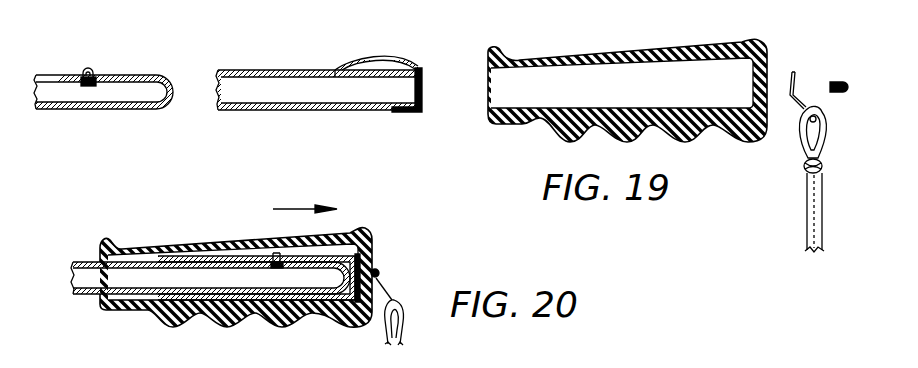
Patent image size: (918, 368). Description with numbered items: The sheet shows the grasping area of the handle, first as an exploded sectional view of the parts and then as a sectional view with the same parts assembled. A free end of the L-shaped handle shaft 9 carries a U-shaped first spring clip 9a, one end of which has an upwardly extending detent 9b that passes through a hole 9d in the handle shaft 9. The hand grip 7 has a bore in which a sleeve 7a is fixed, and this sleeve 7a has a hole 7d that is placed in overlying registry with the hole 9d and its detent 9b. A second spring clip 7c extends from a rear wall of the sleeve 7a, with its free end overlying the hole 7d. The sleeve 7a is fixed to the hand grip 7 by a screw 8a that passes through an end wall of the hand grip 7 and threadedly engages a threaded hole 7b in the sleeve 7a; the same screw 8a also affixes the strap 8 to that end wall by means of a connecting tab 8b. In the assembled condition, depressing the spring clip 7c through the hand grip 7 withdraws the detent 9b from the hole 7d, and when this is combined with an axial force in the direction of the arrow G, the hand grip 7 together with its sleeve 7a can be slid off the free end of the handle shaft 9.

In FIG. 19, the hand grip 7 is at (615, 85).
In FIG. 20, the hand grip 7 is at (178, 242).
In FIG. 19, the sleeve 7a is at (248, 70).
In FIG. 19, the threaded hole 7b is at (421, 88).
In FIG. 19, the second spring clip 7c is at (366, 55).
In FIG. 19, the hole 7d is at (328, 70).
In FIG. 19, the strap 8 is at (825, 200).
In FIG. 19, the screw 8a is at (847, 82).
In FIG. 19, the connecting tab 8b is at (793, 72).
In FIG. 19, the handle shaft 9 is at (72, 75).
In FIG. 20, the handle shaft 9 is at (83, 298).
In FIG. 19, the first spring clip 9a is at (190, 58).
In FIG. 19, the detent 9b is at (88, 70).
In FIG. 19, the hole 9d is at (95, 80).
In FIG. 20, the arrow G is at (305, 198).